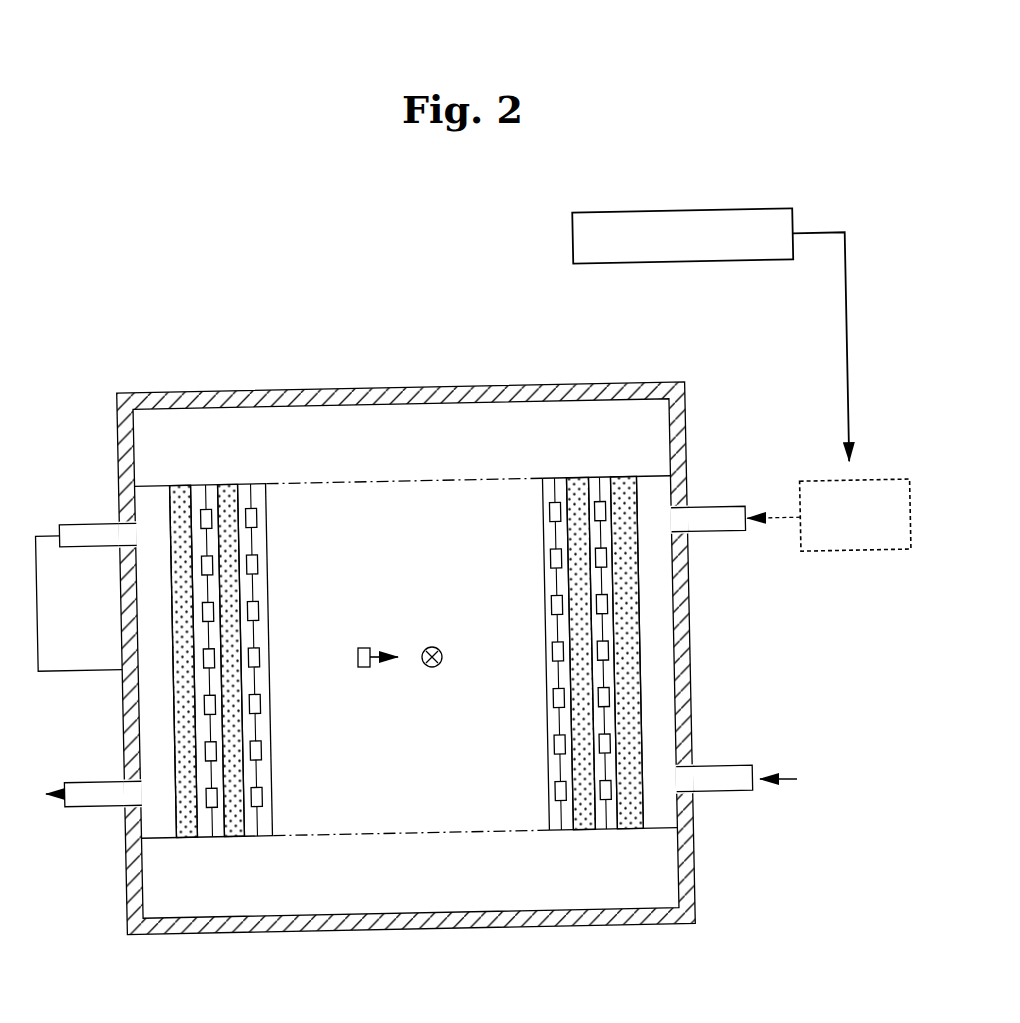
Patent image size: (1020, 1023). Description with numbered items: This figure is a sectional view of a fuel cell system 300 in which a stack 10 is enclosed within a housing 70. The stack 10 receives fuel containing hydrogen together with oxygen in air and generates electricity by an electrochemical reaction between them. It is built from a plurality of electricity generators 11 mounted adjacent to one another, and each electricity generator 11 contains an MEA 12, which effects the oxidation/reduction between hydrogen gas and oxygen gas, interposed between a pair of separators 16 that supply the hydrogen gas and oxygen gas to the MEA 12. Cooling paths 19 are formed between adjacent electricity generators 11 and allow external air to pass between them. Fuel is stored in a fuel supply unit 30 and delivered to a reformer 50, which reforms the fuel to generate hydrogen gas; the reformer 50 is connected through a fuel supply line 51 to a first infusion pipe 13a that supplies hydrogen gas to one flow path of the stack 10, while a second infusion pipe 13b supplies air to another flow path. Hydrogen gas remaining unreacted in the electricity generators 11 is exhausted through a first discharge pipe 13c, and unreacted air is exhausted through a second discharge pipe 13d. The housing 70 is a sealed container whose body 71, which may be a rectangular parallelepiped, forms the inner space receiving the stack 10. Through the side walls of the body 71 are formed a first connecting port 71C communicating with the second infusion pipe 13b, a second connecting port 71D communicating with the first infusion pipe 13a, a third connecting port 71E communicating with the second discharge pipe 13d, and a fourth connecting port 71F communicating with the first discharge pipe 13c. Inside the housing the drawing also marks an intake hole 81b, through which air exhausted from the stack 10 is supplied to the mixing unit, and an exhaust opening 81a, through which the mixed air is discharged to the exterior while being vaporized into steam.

The fuel cell system 300 is at (111, 290).
The stack 10 is at (220, 882).
The electricity generator 11 is at (226, 572).
The MEA 12 is at (207, 660).
The separator 16 is at (239, 660).
The cooling path 19 is at (232, 657).
The first infusion pipe 13a is at (716, 518).
The second infusion pipe 13b is at (758, 772).
The first discharge pipe 13c is at (94, 789).
The second discharge pipe 13d is at (85, 577).
The fuel supply unit 30 is at (573, 238).
The reformer 50 is at (866, 480).
The fuel supply line 51 is at (770, 514).
The housing 70 is at (423, 630).
The body 71 is at (626, 384).
The first connecting port 71C is at (697, 771).
The second connecting port 71D is at (690, 530).
The third connecting port 71E is at (122, 545).
The fourth connecting port 71F is at (122, 784).
The exhaust opening 81a is at (432, 647).
The intake hole 81b is at (362, 648).